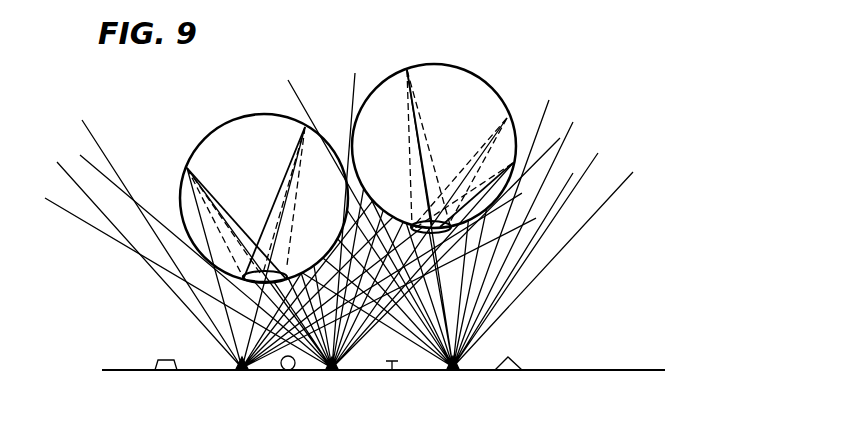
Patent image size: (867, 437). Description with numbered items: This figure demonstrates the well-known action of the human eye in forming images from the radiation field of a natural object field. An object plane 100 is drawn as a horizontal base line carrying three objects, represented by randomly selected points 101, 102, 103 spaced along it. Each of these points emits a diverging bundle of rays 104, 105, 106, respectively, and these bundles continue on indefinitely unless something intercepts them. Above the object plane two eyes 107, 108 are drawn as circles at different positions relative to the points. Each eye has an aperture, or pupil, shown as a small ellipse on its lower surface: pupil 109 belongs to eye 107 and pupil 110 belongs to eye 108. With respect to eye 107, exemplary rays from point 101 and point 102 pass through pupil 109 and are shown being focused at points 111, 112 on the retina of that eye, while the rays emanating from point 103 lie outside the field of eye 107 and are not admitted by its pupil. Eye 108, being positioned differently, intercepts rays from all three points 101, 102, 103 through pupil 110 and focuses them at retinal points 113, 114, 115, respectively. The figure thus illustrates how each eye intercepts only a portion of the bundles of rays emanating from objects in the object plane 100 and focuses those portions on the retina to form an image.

The object plane 100 is at (583, 369).
The point 101 is at (252, 370).
The point 102 is at (336, 371).
The point 103 is at (455, 370).
The bundle of rays 104 is at (210, 331).
The bundle of rays 105 is at (363, 346).
The bundle of rays 106 is at (487, 332).
The eye 107 is at (239, 115).
The eye 108 is at (482, 80).
The aperture (pupil) 109 is at (257, 282).
The aperture (pupil) 110 is at (440, 230).
The point on retina 111 is at (305, 127).
The point on retina 112 is at (187, 168).
The point on retina 113 is at (513, 163).
The point on retina 114 is at (507, 118).
The point on retina 115 is at (407, 70).